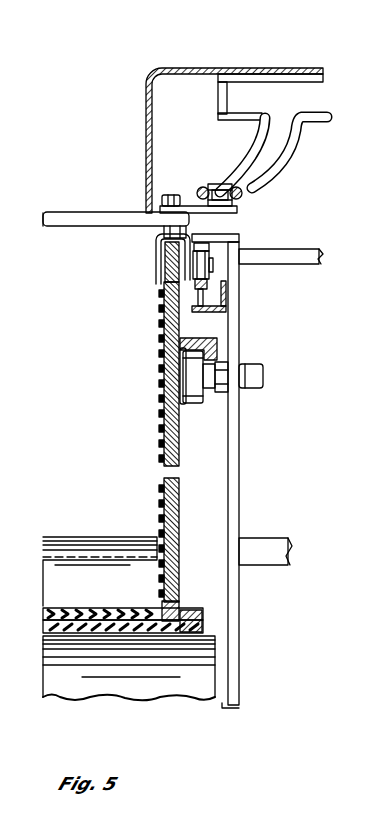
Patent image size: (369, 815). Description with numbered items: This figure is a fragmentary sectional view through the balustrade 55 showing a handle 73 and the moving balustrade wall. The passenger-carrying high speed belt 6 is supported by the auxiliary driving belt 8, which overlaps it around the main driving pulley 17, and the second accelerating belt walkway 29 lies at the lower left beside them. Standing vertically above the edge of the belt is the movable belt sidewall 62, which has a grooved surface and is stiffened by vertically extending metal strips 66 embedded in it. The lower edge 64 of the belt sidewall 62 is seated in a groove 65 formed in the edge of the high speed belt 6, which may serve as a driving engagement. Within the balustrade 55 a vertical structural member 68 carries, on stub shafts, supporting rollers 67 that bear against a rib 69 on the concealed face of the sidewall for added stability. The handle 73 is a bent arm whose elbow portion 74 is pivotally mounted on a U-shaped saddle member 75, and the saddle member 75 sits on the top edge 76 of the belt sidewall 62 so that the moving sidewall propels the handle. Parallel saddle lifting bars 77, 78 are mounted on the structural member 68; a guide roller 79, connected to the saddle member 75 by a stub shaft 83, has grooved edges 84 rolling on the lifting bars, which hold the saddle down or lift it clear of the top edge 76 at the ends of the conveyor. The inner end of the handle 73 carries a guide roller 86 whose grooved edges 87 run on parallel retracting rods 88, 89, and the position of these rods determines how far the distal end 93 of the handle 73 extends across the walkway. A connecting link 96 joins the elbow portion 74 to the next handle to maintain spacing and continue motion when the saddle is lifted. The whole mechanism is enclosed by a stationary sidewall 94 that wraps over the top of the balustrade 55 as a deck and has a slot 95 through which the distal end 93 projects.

The balustrade 55 is at (256, 66).
The stationary sidewall 94 is at (146, 76).
The retracting rod 88 is at (248, 142).
The retracting rod 89 is at (303, 134).
The guide roller 86 is at (208, 188).
The grooved edges 87 is at (238, 186).
The distal end 93 is at (44, 212).
The handle 73 is at (118, 212).
The slot 95 is at (158, 209).
The connecting link 96 is at (168, 194).
The elbow portion 74 is at (170, 228).
The top edge 76 is at (166, 250).
The saddle member 75 is at (158, 256).
The saddle lifting bar 78 is at (165, 300).
The saddle lifting bar 77 is at (200, 240).
The grooved edges 84 is at (207, 258).
The guide roller 79 is at (214, 262).
The stub shaft 83 is at (212, 270).
The rib 69 is at (212, 340).
The supporting roller 67 is at (186, 376).
The belt sidewall 62 is at (182, 386).
The metal strip 66 is at (174, 437).
The vertical structural member 68 is at (240, 441).
The second accelerating belt walkway 29 is at (86, 536).
The lower edge 64 is at (163, 606).
The groove 65 is at (195, 610).
The high speed belt 6 is at (204, 614).
The auxiliary driving belt 8 is at (204, 629).
The main driving pulley 17 is at (208, 672).